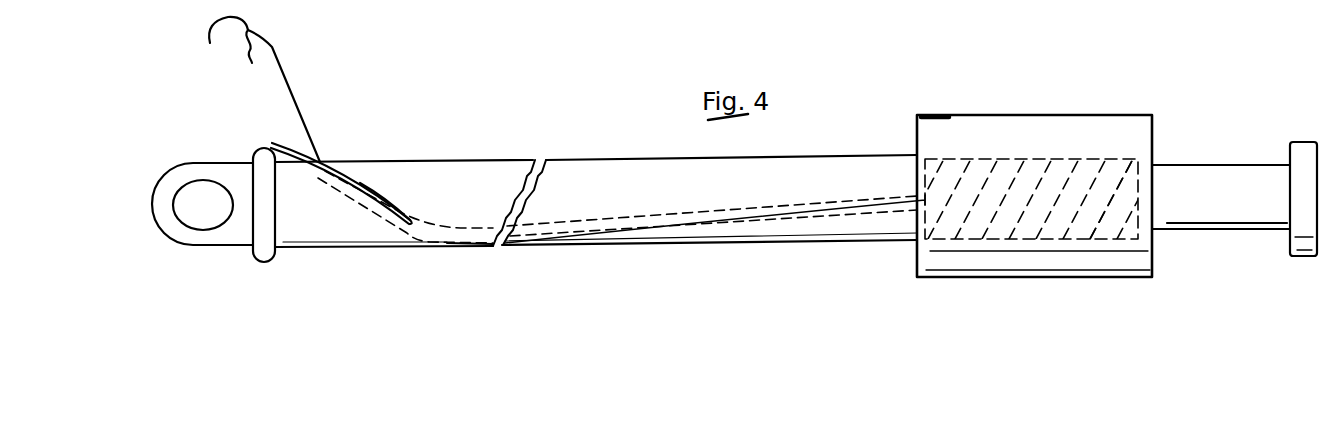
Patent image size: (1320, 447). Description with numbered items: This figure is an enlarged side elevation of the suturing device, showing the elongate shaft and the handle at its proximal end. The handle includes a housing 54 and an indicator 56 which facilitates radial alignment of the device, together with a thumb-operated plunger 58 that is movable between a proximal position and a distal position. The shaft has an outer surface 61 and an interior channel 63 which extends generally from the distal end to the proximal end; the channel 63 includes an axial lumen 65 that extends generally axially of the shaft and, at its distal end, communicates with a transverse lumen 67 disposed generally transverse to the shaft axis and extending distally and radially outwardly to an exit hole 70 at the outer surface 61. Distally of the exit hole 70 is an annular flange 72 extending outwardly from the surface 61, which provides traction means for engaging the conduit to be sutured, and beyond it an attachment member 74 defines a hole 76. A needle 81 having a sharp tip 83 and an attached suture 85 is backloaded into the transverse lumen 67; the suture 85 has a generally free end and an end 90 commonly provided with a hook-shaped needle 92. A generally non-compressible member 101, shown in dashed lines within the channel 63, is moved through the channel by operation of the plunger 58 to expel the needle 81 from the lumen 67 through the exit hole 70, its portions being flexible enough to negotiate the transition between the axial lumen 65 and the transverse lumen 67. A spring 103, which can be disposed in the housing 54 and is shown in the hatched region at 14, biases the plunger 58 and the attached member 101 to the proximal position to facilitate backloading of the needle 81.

The piston 14 is at (987, 207).
The housing 54 is at (1045, 277).
The indicator 56 is at (942, 117).
The plunger 58 is at (1230, 202).
The outer surface 61 is at (457, 160).
The interior channel 63 is at (619, 232).
The axial lumen 65 is at (728, 221).
The transverse lumen 67 is at (445, 244).
The exit hole 70 is at (320, 160).
The annular flange 72 is at (271, 258).
The attachment member 74 is at (156, 228).
The hole 76 is at (197, 194).
The needle 81 is at (373, 193).
The sharp tip 83 is at (288, 150).
The suture 85 is at (301, 128).
The end 90 is at (239, 61).
The needle 92 is at (212, 23).
The non-compressible member 101 is at (807, 211).
The spring 103 is at (1110, 203).